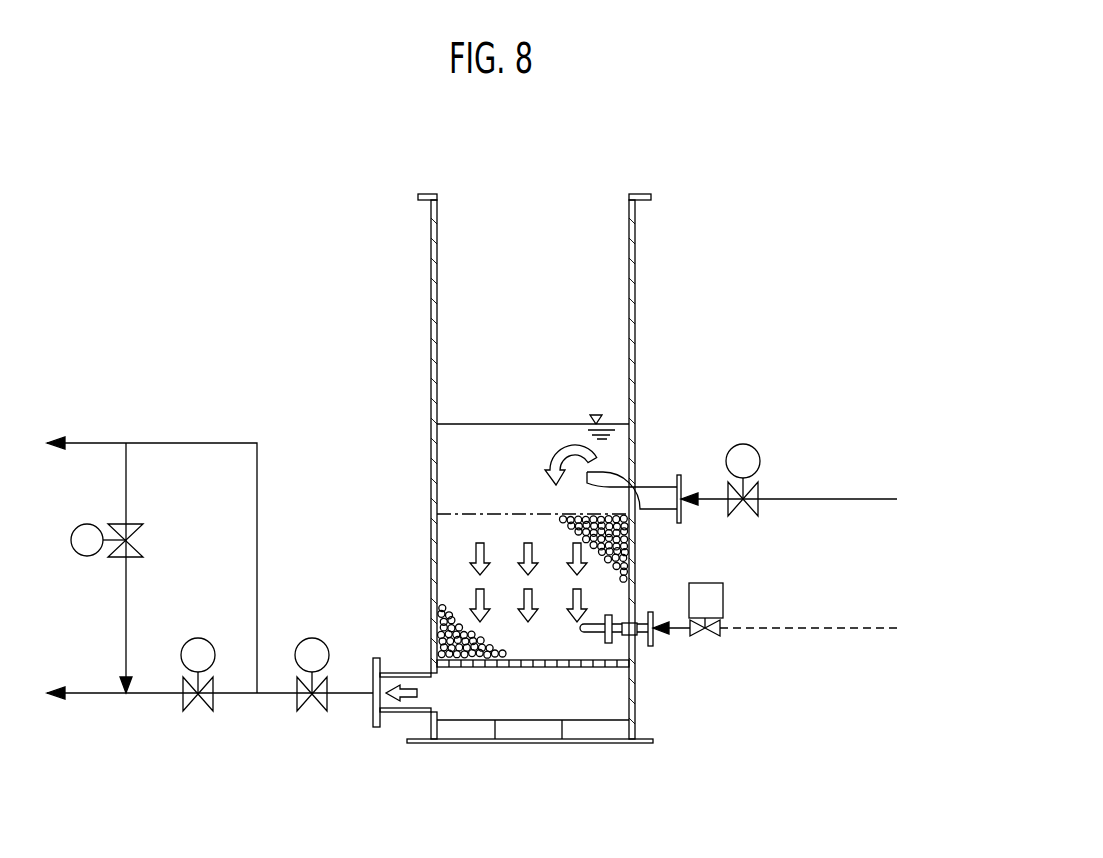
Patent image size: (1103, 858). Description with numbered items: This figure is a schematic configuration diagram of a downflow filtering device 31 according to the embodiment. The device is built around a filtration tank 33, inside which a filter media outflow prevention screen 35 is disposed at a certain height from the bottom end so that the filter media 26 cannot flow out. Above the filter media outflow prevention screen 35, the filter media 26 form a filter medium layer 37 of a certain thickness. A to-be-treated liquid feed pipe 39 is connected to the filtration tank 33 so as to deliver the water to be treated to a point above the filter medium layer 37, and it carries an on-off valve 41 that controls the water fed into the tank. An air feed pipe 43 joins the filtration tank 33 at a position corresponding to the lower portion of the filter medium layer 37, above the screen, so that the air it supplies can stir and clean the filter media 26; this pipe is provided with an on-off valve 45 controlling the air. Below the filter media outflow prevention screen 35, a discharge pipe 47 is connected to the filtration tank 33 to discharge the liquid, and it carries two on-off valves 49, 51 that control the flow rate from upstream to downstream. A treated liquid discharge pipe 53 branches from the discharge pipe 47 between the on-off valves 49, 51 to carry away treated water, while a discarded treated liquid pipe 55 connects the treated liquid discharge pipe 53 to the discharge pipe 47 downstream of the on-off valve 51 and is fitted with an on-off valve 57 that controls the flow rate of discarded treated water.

The filter media 26 is at (452, 598).
The downflow filtering device 31 is at (367, 242).
The filtration tank 33 is at (635, 250).
The filter media outflow prevention screen 35 is at (592, 668).
The filter medium layer 37 is at (452, 548).
The to-be-treated liquid feed pipe 39 is at (832, 497).
The on-off valve 41 is at (743, 443).
The air feed pipe 43 is at (832, 627).
The on-off valve 45 is at (703, 583).
The discharge pipe 47 is at (142, 700).
The on-off valve 49 is at (312, 715).
The on-off valve 51 is at (198, 715).
The treated liquid discharge pipe 53 is at (181, 442).
The discarded treated liquid pipe 55 is at (126, 487).
The on-off valve 57 is at (88, 560).